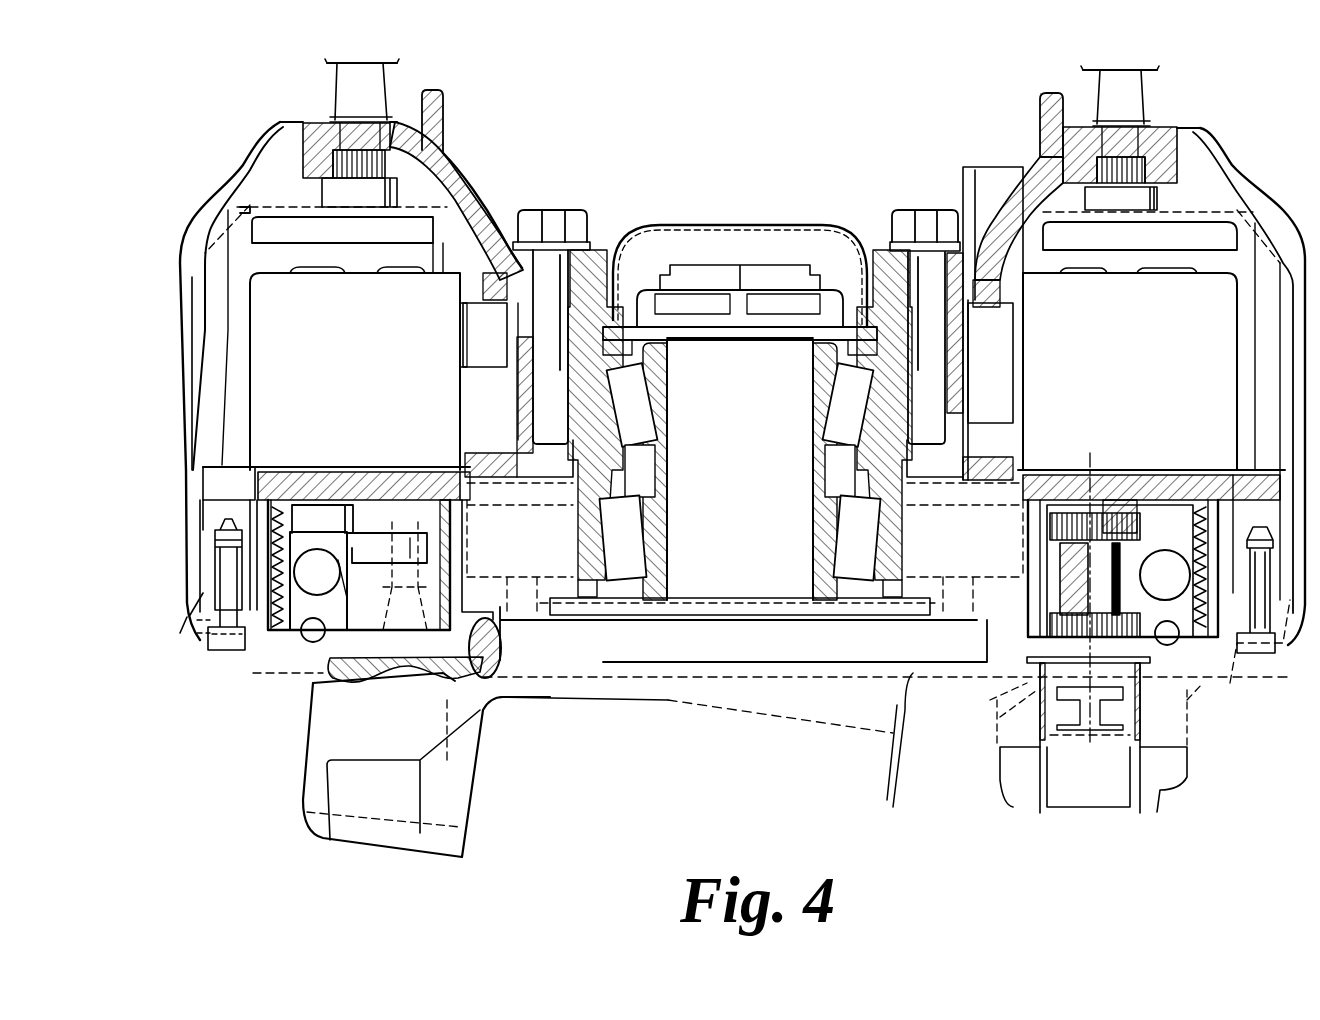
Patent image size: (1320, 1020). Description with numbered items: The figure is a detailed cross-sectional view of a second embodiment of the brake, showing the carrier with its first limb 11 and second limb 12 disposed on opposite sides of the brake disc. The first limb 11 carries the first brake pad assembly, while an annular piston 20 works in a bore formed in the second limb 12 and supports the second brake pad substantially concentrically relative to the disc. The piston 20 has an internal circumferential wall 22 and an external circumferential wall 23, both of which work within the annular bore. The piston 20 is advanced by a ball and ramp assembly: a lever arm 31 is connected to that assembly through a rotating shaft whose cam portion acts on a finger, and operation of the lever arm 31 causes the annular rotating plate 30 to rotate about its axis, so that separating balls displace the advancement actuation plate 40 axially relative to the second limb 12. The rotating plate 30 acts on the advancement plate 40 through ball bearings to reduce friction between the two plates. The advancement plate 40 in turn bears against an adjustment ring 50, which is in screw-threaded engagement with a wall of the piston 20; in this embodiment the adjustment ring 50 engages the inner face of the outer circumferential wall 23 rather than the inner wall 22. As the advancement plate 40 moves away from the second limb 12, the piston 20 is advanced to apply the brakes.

The first limb 11 is at (473, 187).
The second limb 12 is at (293, 677).
The annular piston 20 is at (253, 483).
The internal circumferential wall 22 is at (268, 614).
The external circumferential wall 23 is at (278, 610).
The annular rotating plate 30 is at (364, 625).
The lever arm 31 is at (1160, 785).
The advancement actuation plate 40 is at (372, 530).
The adjustment ring 50 is at (328, 502).